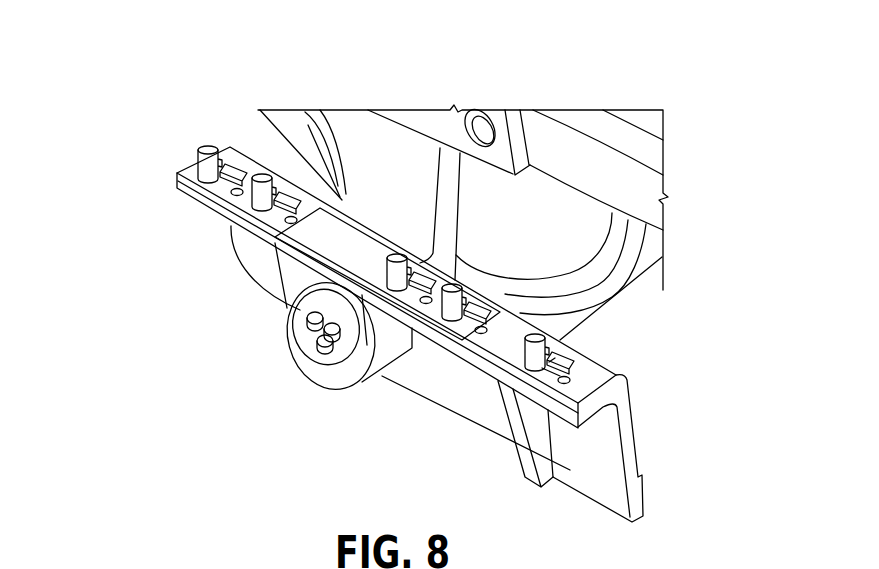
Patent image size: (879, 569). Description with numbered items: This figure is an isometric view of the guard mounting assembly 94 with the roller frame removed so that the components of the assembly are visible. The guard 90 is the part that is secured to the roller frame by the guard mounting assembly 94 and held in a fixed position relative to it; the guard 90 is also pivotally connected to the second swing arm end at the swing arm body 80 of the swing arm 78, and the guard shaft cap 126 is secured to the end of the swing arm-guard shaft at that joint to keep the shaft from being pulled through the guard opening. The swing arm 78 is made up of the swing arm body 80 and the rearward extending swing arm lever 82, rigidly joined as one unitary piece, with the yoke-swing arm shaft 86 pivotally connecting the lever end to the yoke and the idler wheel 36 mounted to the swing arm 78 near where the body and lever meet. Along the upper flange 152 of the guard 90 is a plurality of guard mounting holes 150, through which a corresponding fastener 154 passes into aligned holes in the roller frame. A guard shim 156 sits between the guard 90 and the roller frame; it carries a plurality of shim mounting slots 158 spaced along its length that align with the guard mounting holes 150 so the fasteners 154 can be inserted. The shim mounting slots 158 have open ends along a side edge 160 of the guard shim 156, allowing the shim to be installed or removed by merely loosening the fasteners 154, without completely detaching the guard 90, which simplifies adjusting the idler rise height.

The idler wheel 36 is at (588, 227).
The swing arm 78 is at (302, 110).
The swing arm body 80 is at (383, 147).
The swing arm lever 82 is at (458, 108).
The yoke-swing arm shaft 86 is at (476, 118).
The guard 90 is at (617, 483).
The guard mounting assembly 94 is at (197, 300).
The guard shaft cap 126 is at (345, 350).
The guard mounting holes 150 is at (284, 221).
The upper flange 152 is at (638, 434).
The fastener 154 is at (203, 143).
The guard shim 156 is at (600, 370).
The shim mounting slots 158 is at (232, 150).
The side edge 160 is at (613, 373).